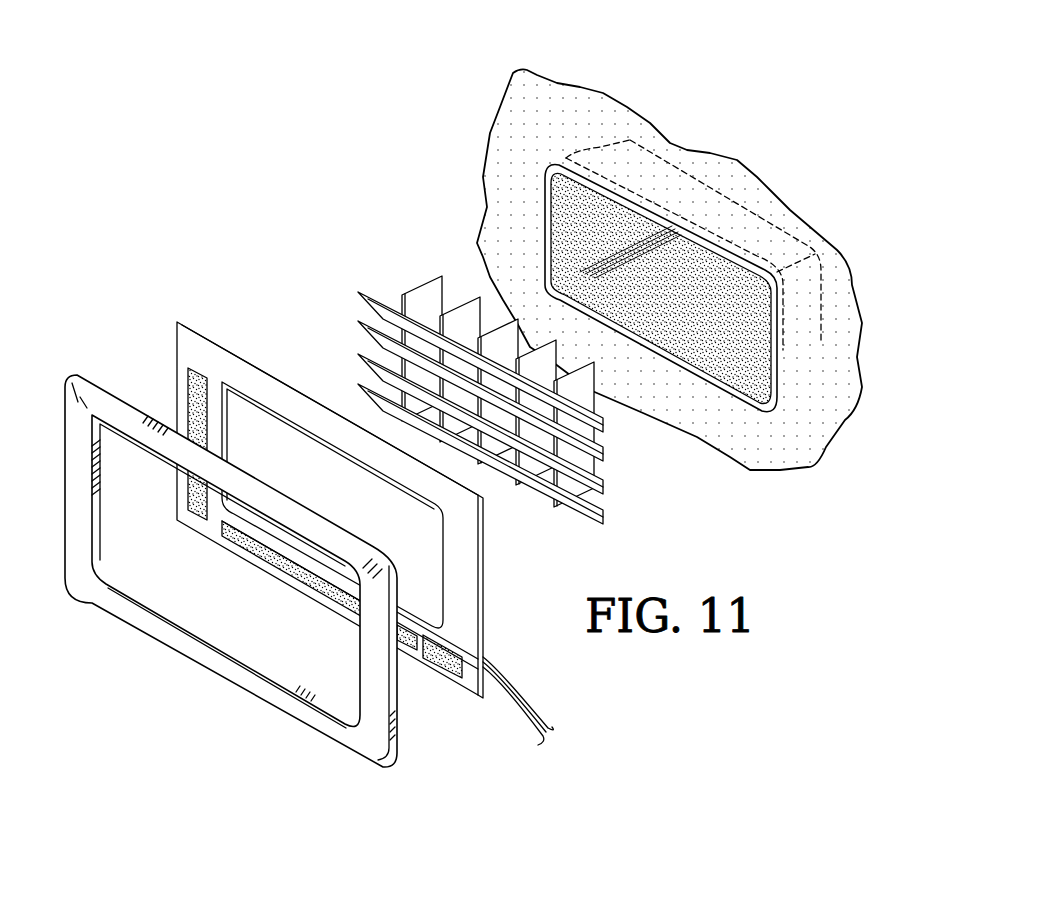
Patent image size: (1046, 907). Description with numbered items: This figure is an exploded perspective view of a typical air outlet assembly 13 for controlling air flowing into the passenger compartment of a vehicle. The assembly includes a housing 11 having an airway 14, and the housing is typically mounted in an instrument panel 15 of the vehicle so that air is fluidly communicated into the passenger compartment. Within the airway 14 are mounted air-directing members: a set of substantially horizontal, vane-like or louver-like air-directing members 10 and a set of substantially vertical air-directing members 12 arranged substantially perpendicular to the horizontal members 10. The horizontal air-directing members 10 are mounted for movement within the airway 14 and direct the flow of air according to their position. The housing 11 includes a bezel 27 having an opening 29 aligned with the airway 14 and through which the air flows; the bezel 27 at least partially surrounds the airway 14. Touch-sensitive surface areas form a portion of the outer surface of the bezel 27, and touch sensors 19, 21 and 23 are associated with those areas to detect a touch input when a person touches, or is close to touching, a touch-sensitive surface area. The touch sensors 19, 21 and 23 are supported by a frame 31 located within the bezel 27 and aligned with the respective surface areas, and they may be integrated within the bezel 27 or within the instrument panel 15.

The horizontal air-directing member 10 is at (604, 425).
The housing 11 is at (709, 263).
The vertical air-directing member 12 is at (517, 320).
The air outlet assembly 13 is at (468, 404).
The airway 14 is at (762, 352).
The instrument panel 15 is at (547, 117).
The touch sensor 19 is at (303, 578).
The touch sensor 21 is at (182, 408).
The touch sensor 23 is at (442, 665).
The bezel 27 is at (350, 740).
The opening 29 is at (140, 593).
The frame 31 is at (486, 595).